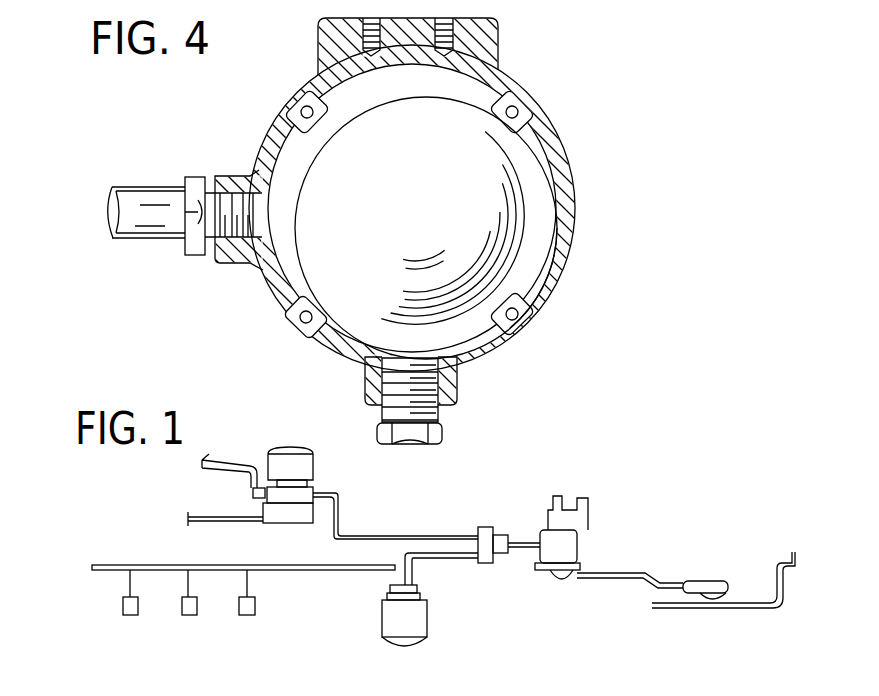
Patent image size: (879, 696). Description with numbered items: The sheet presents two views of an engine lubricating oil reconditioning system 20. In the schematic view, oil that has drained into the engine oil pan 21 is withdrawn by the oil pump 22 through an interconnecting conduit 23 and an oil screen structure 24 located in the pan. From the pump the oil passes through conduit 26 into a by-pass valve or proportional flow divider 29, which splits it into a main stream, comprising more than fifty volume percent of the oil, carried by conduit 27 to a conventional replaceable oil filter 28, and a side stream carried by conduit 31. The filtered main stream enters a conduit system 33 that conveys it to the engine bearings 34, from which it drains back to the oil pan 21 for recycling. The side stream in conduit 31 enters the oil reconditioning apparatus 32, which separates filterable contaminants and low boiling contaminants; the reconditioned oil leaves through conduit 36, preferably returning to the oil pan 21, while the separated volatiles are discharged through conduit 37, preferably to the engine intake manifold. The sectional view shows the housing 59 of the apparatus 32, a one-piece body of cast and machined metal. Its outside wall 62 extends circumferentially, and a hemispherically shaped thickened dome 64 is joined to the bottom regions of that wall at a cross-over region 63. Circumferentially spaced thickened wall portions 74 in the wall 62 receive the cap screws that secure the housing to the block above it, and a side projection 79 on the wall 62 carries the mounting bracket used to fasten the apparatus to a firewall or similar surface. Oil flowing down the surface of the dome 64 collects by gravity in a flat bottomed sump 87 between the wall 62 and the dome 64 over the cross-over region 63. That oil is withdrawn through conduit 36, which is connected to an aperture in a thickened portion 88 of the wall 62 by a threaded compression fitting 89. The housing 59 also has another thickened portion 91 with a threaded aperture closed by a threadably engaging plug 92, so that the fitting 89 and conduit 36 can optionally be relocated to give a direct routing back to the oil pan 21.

In FIG. 1, the oil reconditioning system 20 is at (528, 479).
In FIG. 1, the engine oil pan 21 is at (757, 610).
In FIG. 1, the oil pump 22 is at (578, 547).
In FIG. 1, the interconnecting conduit 23 is at (628, 576).
In FIG. 1, the oil screen structure 24 is at (715, 582).
In FIG. 1, the conduit 26 is at (523, 551).
In FIG. 1, the conduit 27 is at (455, 559).
In FIG. 1, the replaceable oil filter 28 is at (427, 612).
In FIG. 1, the by-pass valve or proportional flow divider 29 is at (495, 526).
In FIG. 1, the conduit 31 is at (381, 536).
In FIG. 1, the oil reconditioning apparatus 32 is at (286, 532).
In FIG. 1, the conduit system 33 is at (312, 572).
In FIG. 1, the engine bearings 34 is at (140, 605).
In FIG. 4, the conduit 36 is at (158, 233).
In FIG. 1, the conduit 36 is at (218, 514).
In FIG. 1, the conduit 37 is at (232, 461).
In FIG. 4, the housing 59 is at (586, 239).
In FIG. 4, the outside wall 62 is at (578, 217).
In FIG. 4, the cross-over region 63 is at (480, 326).
In FIG. 4, the thickened dome 64 is at (411, 203).
In FIG. 4, the thickened wall portions 74 is at (536, 126).
In FIG. 4, the side projection 79 is at (497, 42).
In FIG. 4, the sump 87 is at (522, 268).
In FIG. 4, the thickened portion 88 is at (226, 178).
In FIG. 4, the threaded compression fitting 89 is at (200, 249).
In FIG. 4, the thickened portion 91 is at (458, 391).
In FIG. 4, the plug 92 is at (443, 433).